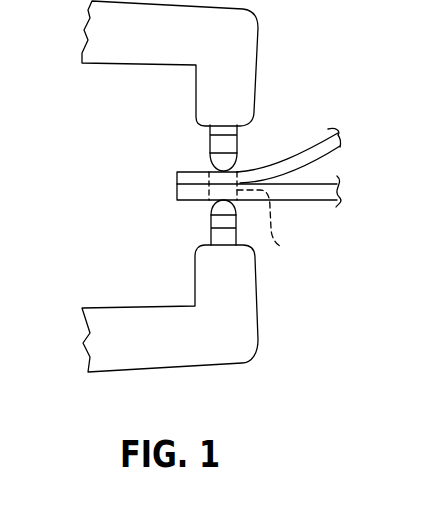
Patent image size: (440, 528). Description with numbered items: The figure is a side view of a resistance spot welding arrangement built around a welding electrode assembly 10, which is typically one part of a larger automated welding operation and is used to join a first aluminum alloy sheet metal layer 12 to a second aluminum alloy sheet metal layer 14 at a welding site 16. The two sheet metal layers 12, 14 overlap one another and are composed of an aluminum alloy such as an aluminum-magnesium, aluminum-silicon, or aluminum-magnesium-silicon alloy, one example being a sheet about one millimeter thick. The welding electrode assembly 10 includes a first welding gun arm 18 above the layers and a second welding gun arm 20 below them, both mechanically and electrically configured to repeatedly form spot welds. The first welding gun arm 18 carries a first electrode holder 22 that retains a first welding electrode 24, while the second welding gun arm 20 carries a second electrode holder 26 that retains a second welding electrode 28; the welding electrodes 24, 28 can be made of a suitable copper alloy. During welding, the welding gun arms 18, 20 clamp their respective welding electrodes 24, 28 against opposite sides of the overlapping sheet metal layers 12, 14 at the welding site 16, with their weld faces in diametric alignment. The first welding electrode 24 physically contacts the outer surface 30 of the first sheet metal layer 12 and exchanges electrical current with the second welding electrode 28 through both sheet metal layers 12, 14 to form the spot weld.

The welding electrode assembly 10 is at (328, 83).
The first aluminum alloy sheet metal layer 12 is at (304, 158).
The second aluminum alloy sheet metal layer 14 is at (317, 192).
The welding site 16 is at (285, 247).
The first welding gun arm 18 is at (258, 46).
The second welding gun arm 20 is at (257, 310).
The first electrode holder 22 is at (220, 135).
The first welding electrode 24 is at (220, 162).
The second electrode holder 26 is at (220, 233).
The second welding electrode 28 is at (223, 209).
The outer surface 30 is at (240, 170).